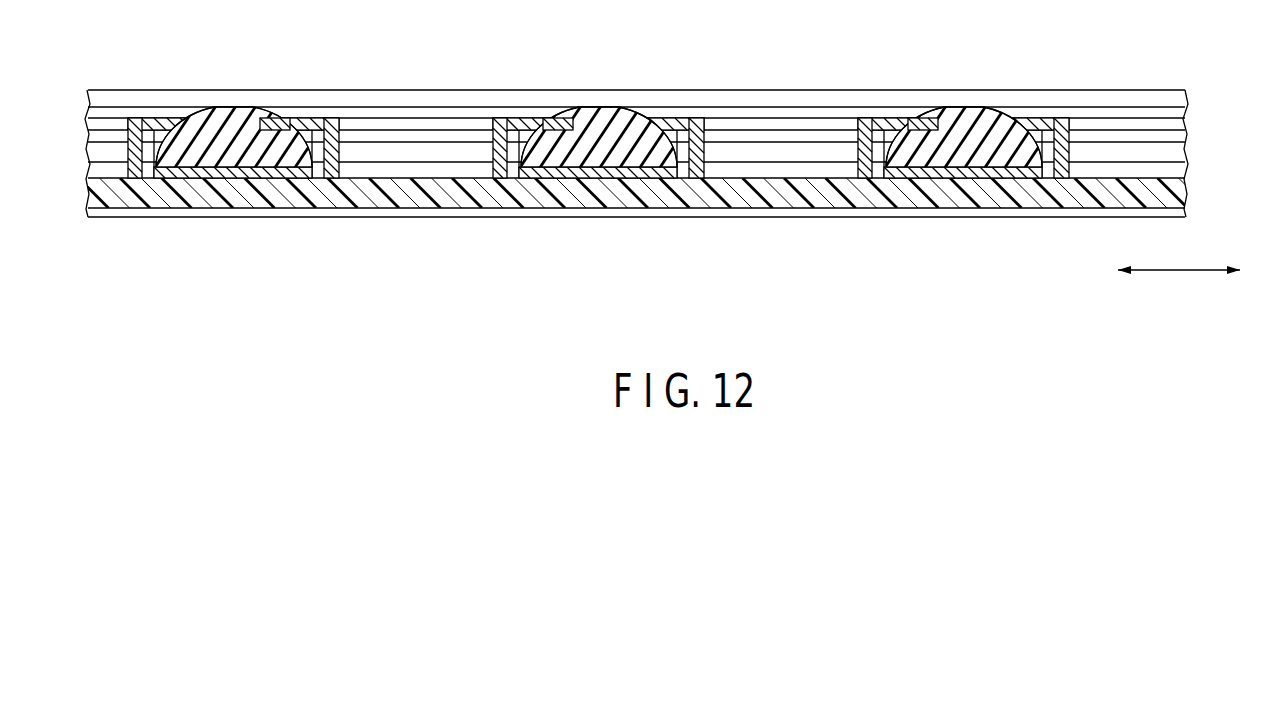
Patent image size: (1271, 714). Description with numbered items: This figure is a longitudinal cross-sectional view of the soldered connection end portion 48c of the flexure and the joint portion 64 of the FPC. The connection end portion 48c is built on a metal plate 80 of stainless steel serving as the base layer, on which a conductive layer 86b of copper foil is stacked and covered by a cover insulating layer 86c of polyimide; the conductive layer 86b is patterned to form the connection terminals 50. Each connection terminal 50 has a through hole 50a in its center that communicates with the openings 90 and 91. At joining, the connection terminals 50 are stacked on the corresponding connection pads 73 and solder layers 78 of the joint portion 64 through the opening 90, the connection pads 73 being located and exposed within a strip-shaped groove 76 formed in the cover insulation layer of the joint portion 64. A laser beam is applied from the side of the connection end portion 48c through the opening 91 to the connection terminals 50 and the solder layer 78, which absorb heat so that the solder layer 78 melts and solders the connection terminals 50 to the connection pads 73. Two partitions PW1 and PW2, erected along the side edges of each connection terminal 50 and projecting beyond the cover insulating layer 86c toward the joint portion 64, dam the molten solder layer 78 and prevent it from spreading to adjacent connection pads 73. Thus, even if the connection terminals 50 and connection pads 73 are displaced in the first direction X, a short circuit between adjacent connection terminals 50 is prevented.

The connection end portion 48c is at (867, 80).
The connection terminal 50 is at (323, 122).
The through hole 50a is at (260, 120).
The joint portion 64 is at (791, 195).
The connection pad 73 is at (222, 174).
The groove 76 is at (392, 160).
The solder layer 78 is at (214, 128).
The metal plate 80 is at (1150, 97).
The conductive layer 86b is at (1173, 123).
The cover insulating layer 86c is at (1165, 137).
The opening 90 is at (397, 137).
The opening 91 is at (448, 112).
The partition PW1 is at (128, 150).
The partition PW2 is at (343, 160).
The first direction X is at (1179, 255).